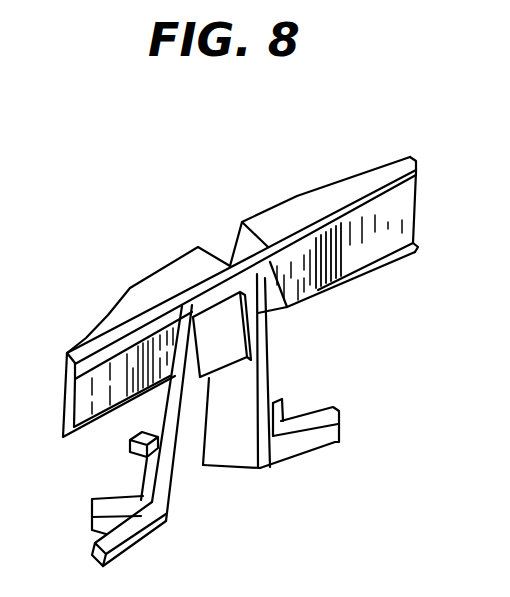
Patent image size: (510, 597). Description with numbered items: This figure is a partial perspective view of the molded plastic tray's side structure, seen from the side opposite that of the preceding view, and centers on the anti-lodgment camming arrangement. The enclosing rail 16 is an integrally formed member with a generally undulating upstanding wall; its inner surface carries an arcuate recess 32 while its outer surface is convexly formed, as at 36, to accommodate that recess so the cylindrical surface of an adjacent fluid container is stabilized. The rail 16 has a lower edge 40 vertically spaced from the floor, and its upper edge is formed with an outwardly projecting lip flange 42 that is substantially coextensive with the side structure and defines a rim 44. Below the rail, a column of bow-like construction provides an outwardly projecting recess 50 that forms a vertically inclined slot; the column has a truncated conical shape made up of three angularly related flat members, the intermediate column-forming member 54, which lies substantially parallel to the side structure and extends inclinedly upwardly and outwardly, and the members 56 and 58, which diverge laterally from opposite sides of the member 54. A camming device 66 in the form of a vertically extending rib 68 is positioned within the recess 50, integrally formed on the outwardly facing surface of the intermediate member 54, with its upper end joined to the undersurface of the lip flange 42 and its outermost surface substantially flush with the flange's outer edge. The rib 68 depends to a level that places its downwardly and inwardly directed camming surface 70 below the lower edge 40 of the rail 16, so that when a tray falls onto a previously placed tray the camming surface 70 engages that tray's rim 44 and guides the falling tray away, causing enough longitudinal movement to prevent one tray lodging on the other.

The rail 16 is at (300, 297).
The arcuate recess 32 is at (385, 166).
The convex formation 36 is at (402, 223).
The lower edge 40 is at (397, 262).
The lip flange 42 is at (414, 167).
The rim 44 is at (299, 207).
The outwardly projecting recess 50 is at (214, 477).
The intermediate column-forming member 54 is at (184, 465).
The column-forming member 56 is at (250, 460).
The column-forming member 58 is at (152, 468).
The camming device 66 is at (275, 348).
The rib 68 is at (217, 342).
The camming surface 70 is at (226, 362).